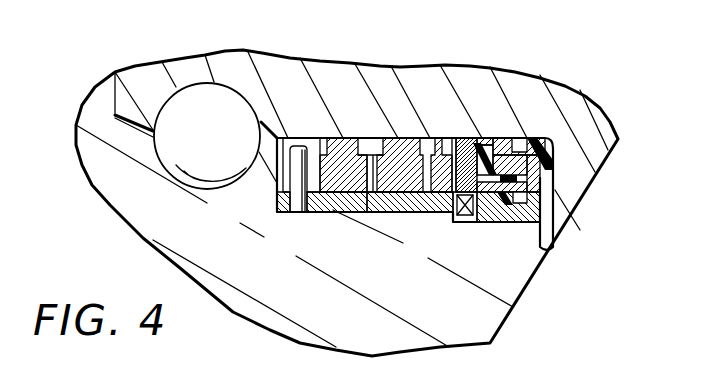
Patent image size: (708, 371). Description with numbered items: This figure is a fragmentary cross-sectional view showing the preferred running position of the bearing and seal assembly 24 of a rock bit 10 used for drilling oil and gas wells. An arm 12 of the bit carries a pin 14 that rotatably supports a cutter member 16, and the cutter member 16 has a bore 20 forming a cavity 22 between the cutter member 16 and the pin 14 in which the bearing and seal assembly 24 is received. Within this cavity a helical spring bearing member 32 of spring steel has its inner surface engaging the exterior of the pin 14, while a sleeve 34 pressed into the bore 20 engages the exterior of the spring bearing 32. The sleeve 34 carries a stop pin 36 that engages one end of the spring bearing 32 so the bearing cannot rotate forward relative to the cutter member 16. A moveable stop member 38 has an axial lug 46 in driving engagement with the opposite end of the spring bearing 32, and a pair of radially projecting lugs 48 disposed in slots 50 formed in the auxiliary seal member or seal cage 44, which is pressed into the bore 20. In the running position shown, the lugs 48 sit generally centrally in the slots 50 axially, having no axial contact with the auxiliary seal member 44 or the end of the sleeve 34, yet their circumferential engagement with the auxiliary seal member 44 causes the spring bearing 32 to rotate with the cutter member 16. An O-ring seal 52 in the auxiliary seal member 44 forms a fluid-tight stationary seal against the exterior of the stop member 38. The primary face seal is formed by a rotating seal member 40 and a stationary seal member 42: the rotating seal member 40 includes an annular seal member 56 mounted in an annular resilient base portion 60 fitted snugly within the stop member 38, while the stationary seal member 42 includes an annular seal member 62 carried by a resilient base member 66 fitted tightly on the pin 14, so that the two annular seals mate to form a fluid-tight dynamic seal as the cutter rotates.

The rock bit 10 is at (93, 71).
The arm 12 is at (598, 152).
The pin 14 is at (243, 50).
The cutter member 16 is at (123, 193).
The bore 20 is at (395, 195).
The cavity 22 is at (375, 190).
The bearing and seal assembly 24 is at (357, 126).
The helical spring bearing member 32 is at (340, 150).
The sleeve 34 is at (335, 200).
The stop pin 36 is at (303, 172).
The moveable stop member 38 is at (452, 138).
The rotating seal member 40 is at (478, 138).
The stationary seal member 42 is at (535, 142).
The auxiliary seal member 44 is at (557, 224).
The lug 46 is at (443, 138).
The radially projecting lugs 48 is at (395, 212).
The slots 50 is at (480, 212).
The O-ring seal 52 is at (512, 224).
The annular seal member 56 is at (503, 140).
The annular resilient base portion 60 is at (480, 138).
The annular seal member 62 is at (545, 176).
The resilient base member 66 is at (557, 153).